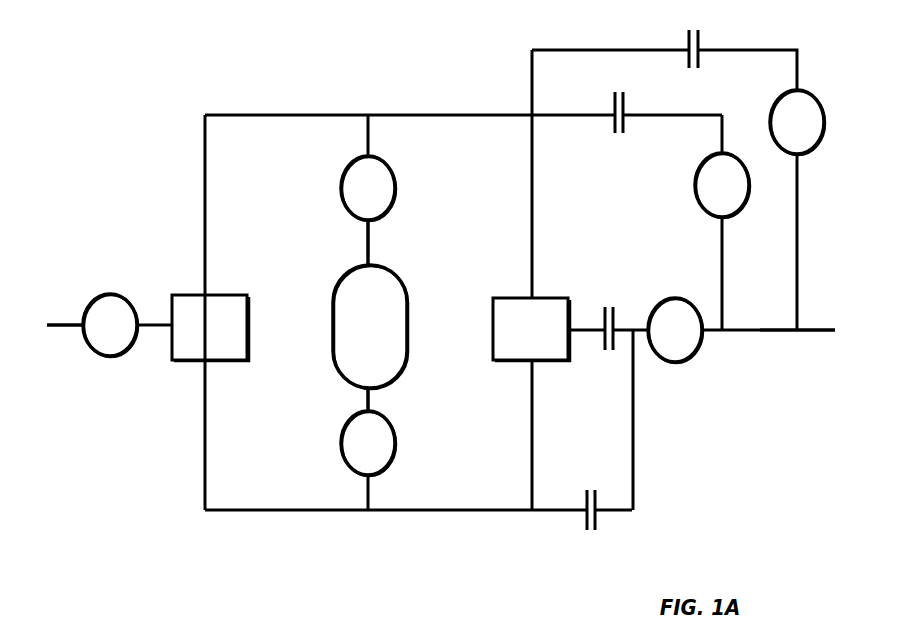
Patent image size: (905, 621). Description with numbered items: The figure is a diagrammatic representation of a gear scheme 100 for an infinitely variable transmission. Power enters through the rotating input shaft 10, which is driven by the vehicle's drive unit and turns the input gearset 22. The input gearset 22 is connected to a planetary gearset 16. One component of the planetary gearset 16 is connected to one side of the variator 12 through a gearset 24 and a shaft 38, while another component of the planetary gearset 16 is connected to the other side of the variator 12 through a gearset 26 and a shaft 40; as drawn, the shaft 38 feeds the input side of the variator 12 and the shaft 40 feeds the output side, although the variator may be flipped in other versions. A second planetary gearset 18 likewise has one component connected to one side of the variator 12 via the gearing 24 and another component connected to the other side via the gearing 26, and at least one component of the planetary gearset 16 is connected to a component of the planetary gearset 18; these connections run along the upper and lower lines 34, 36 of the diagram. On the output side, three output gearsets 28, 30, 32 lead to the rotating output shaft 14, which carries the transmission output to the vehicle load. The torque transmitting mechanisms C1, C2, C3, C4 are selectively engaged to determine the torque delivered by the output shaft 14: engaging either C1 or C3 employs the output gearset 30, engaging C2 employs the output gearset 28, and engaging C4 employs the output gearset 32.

The gear scheme 100 is at (411, 50).
The input shaft 10 is at (66, 325).
The output shaft 14 is at (818, 328).
The variator 12 is at (358, 339).
The planetary gearset 16 is at (197, 341).
The planetary gearset 18 is at (518, 343).
The input gearset 22 is at (98, 339).
The gearset 24 is at (356, 202).
The gearset 26 is at (356, 457).
The output gearset 28 is at (710, 199).
The output gearset 30 is at (663, 344).
The output gearset 32 is at (785, 136).
The top rail 34 is at (285, 113).
The bottom rail 36 is at (275, 512).
The shaft 38 is at (370, 246).
The shaft 40 is at (370, 401).
The torque transmitting mechanism C1 is at (607, 315).
The torque transmitting mechanism C2 is at (617, 127).
The torque transmitting mechanism C3 is at (577, 516).
The torque transmitting mechanism C4 is at (693, 62).